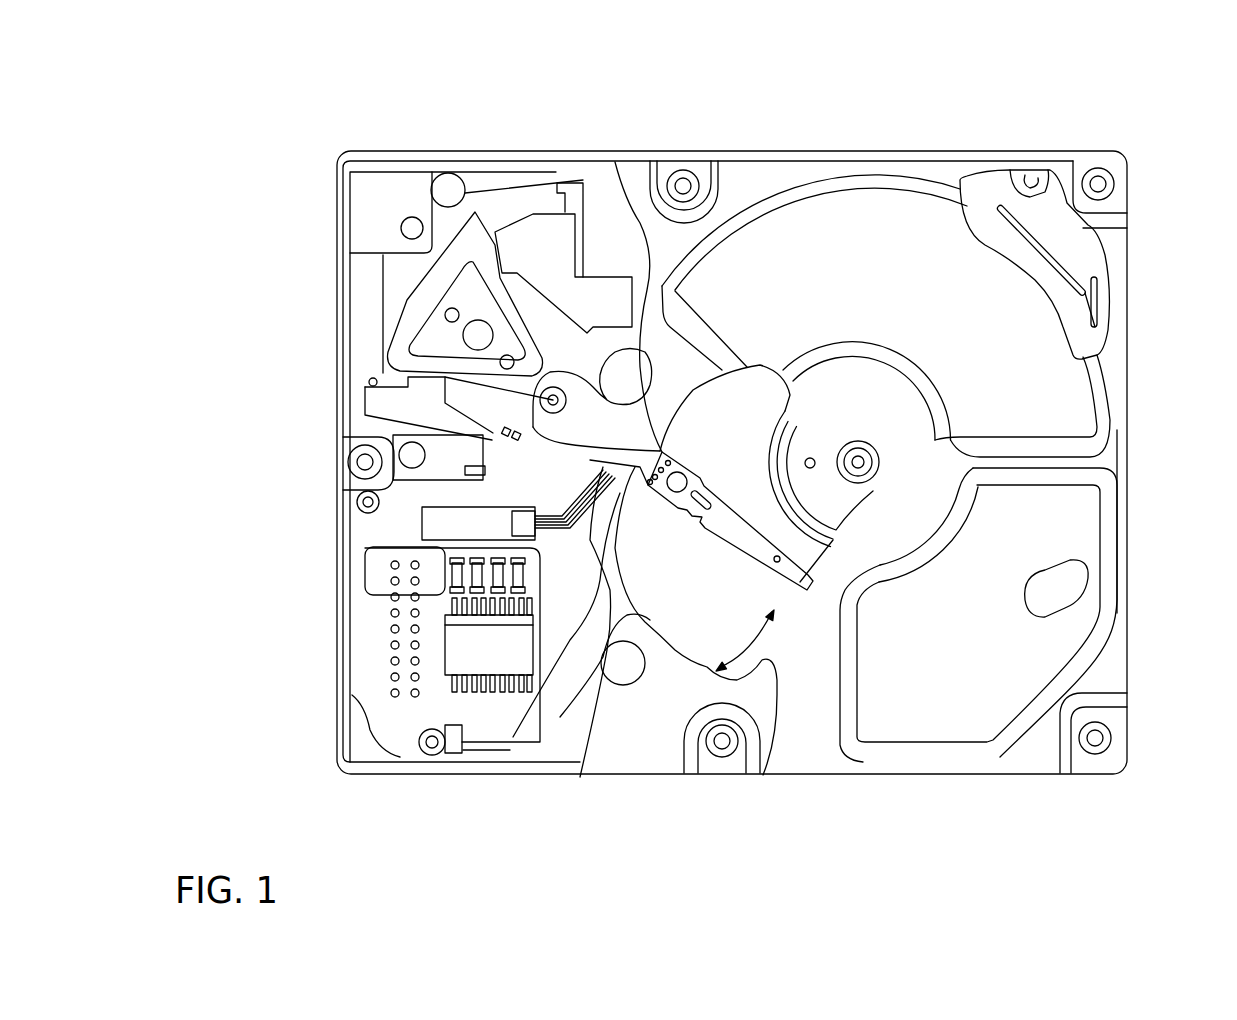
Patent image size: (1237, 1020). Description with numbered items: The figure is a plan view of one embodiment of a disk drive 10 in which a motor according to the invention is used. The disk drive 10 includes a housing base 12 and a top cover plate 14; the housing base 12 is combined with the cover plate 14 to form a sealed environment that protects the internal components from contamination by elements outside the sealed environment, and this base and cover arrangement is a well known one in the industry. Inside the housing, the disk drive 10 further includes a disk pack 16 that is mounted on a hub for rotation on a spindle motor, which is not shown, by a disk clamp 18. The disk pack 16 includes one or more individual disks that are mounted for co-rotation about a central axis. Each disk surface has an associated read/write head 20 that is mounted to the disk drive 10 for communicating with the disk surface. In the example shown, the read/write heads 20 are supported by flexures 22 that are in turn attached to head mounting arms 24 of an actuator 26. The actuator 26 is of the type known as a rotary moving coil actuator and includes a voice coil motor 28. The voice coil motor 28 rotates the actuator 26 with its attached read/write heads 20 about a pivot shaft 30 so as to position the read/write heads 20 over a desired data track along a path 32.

The disk drive 10 is at (305, 160).
The housing base 12 is at (487, 773).
The top cover plate 14 is at (1117, 453).
The disk pack 16 is at (690, 625).
The disk clamp 18 is at (873, 491).
The read/write head 20 is at (806, 590).
The flexure 22 is at (737, 523).
The head mounting arm 24 is at (463, 470).
The actuator 26 is at (612, 372).
The voice coil motor 28 is at (540, 182).
The pivot shaft 30 is at (369, 382).
The path 32 is at (763, 772).